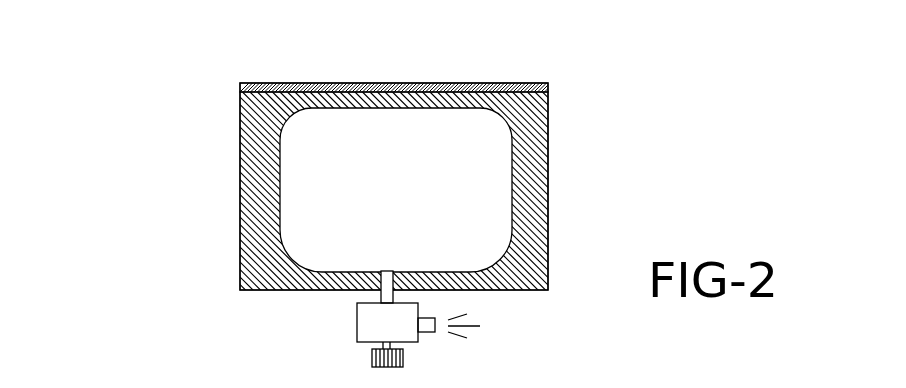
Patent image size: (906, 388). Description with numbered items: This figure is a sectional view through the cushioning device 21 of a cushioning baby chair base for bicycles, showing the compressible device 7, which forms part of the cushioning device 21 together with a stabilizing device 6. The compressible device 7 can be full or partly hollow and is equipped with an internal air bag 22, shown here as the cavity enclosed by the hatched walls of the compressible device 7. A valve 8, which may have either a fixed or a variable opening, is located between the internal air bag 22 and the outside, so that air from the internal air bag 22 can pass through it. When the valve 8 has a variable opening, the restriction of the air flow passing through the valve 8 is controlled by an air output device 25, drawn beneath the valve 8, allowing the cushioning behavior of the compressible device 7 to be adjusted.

The cushioning device 21 is at (153, 64).
The stabilizing device 6 is at (547, 87).
The compressible device 7 is at (540, 145).
The internal air bag 22 is at (493, 178).
The valve 8 is at (365, 323).
The air output device 25 is at (373, 360).